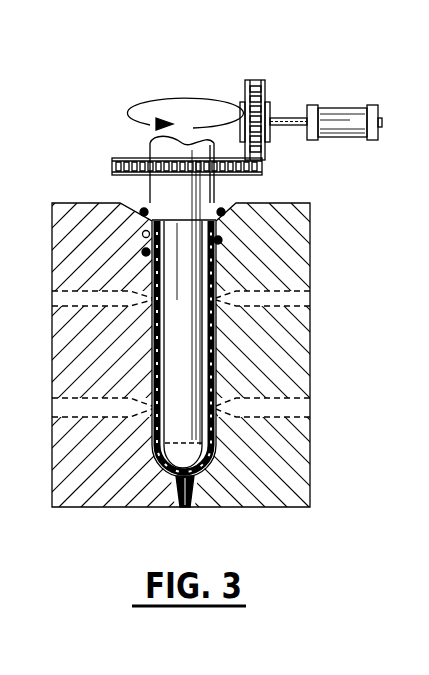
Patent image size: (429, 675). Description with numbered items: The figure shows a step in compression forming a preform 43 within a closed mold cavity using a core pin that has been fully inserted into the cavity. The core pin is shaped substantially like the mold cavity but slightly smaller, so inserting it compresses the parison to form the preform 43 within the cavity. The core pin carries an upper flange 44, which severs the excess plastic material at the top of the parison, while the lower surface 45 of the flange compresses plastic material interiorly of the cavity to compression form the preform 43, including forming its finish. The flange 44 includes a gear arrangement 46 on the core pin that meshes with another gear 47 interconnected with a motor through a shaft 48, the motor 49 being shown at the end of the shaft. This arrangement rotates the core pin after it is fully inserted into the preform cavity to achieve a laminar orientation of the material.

The preform 43 is at (155, 447).
The upper flange 44 is at (218, 180).
The lower surface of the flange 45 is at (220, 222).
The gear arrangement 46 is at (112, 163).
The gear 47 is at (257, 80).
The drive shaft 48 is at (288, 126).
The motor 49 is at (345, 110).